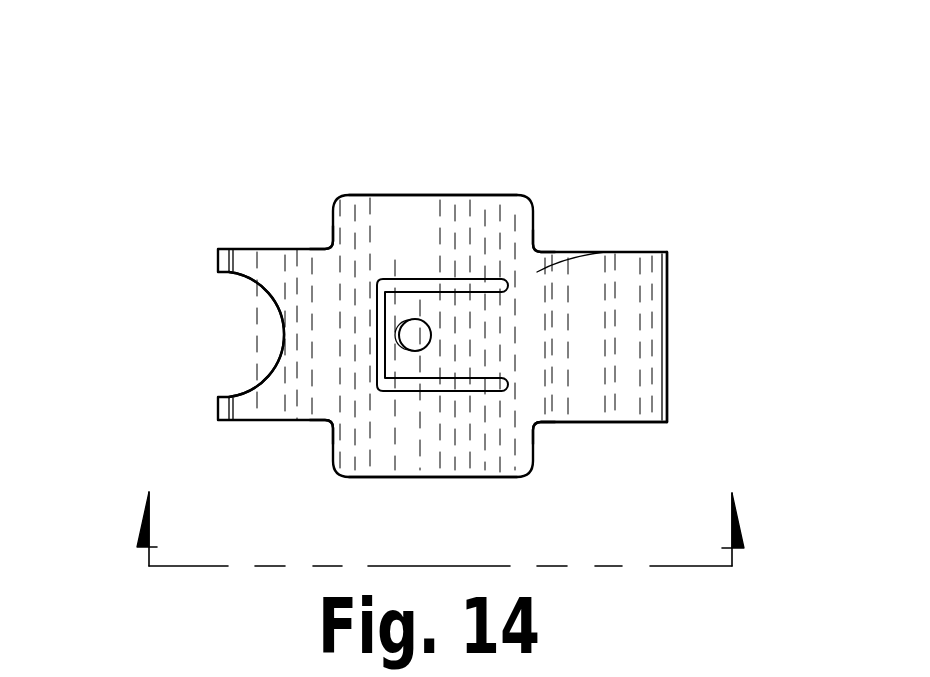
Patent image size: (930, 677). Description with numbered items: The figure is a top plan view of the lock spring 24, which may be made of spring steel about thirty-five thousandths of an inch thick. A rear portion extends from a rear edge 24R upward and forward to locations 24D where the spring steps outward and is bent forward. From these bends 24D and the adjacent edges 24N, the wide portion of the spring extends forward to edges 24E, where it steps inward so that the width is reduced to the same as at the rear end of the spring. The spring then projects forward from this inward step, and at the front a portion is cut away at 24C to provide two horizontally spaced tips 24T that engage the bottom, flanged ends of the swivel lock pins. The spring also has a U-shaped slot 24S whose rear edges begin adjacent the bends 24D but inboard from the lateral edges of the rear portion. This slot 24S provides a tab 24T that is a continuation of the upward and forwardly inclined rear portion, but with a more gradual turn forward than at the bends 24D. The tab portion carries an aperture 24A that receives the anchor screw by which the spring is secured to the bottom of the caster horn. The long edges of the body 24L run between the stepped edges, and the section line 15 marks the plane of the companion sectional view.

The spring 24 is at (498, 80).
The long edges of clip body 24L is at (442, 195).
The tips and tab 24T is at (430, 300).
The U-shaped slot 24S is at (470, 285).
The aperture 24A is at (410, 337).
The edges 24N is at (537, 225).
The bends 24D is at (547, 390).
The rear edge 24R is at (667, 318).
The edges 24E is at (330, 227).
The cutaway 24C is at (237, 343).
The section line 15 is at (440, 511).